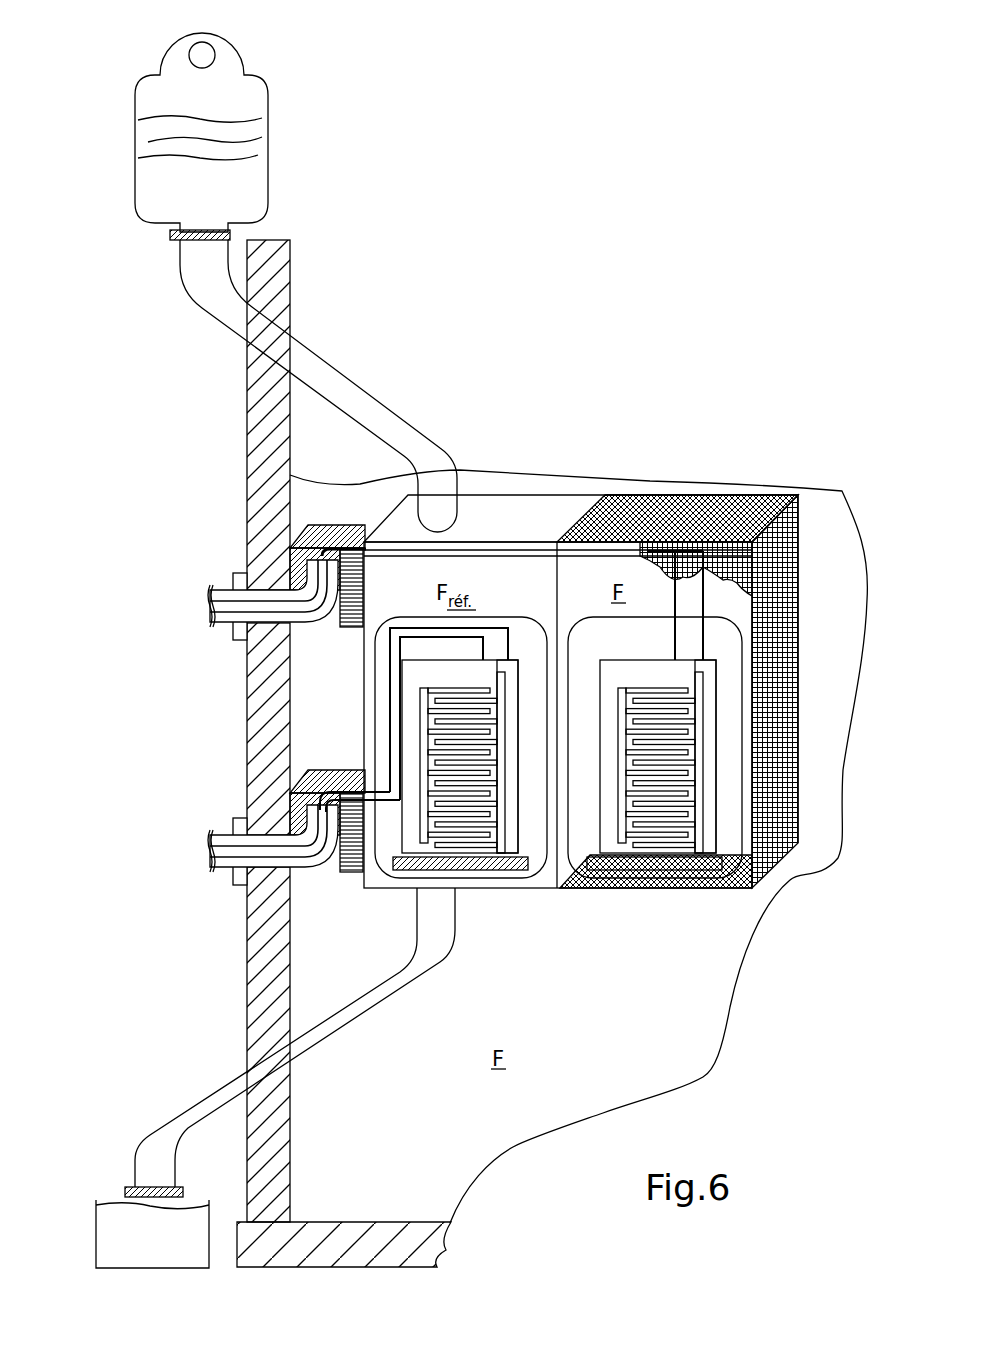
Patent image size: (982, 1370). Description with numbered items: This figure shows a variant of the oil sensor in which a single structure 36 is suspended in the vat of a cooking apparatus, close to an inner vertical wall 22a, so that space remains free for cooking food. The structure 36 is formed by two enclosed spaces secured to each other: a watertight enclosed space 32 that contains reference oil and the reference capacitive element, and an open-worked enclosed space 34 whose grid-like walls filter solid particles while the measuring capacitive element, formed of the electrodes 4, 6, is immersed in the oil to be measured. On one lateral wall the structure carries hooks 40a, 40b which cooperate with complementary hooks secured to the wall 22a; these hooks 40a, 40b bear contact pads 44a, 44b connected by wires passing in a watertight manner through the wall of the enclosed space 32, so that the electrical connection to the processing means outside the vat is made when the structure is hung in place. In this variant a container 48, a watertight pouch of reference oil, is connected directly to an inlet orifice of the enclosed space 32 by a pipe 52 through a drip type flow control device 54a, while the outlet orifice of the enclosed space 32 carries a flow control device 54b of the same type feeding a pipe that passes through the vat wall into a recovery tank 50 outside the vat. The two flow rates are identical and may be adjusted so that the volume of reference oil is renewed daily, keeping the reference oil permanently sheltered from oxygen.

The electrode 4 is at (596, 822).
The electrode 6 is at (712, 824).
The inner vertical wall 22a is at (255, 985).
The enclosed space 32 is at (255, 440).
The open-worked enclosed space 34 is at (623, 514).
The structure 36 is at (700, 408).
The hook 40a is at (303, 532).
The hook 40b is at (303, 776).
The contact pad 44a is at (318, 624).
The contact pad 44b is at (318, 869).
The container 48 is at (268, 178).
The recovery tank 50 is at (96, 1216).
The pipe 52 is at (340, 360).
The flow control device 54a is at (166, 236).
The flow control device 54b is at (123, 1194).